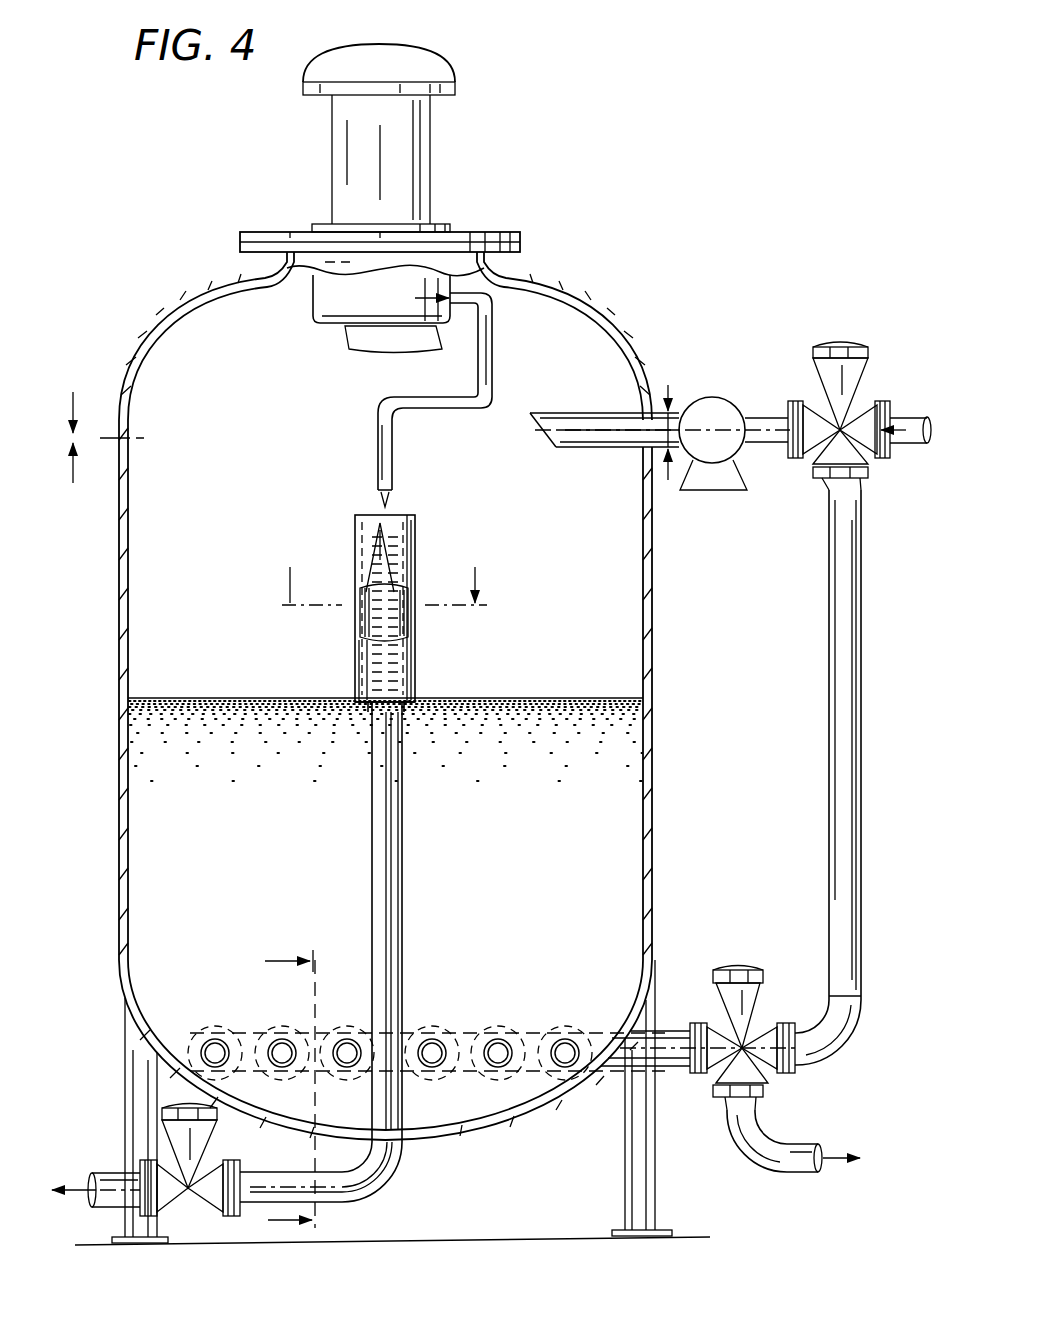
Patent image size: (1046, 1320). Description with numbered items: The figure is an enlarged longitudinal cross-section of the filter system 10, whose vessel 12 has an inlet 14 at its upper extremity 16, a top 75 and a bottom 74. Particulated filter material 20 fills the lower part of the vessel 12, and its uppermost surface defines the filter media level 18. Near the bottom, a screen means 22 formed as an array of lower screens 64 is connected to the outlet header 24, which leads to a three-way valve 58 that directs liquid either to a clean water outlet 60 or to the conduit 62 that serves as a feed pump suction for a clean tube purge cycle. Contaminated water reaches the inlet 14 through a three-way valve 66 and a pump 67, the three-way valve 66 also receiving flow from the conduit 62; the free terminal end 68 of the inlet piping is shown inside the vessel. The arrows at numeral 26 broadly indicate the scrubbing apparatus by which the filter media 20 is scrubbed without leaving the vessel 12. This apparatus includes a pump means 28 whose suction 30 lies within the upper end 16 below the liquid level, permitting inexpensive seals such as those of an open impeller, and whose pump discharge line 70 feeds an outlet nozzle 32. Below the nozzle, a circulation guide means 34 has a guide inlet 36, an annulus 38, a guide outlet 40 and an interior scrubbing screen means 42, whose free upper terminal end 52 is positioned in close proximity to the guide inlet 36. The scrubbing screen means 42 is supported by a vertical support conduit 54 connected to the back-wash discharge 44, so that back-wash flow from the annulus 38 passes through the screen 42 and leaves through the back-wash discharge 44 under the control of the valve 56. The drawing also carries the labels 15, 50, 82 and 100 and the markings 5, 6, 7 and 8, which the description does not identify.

The filter system 10 is at (717, 665).
The vessel 12 is at (654, 782).
The inlet 14 is at (585, 413).
The inlet connection 15 is at (907, 424).
The upper extremity of the vessel 16 is at (574, 346).
The filter media level 18 is at (607, 696).
The particulated filter material 20 is at (150, 762).
The screen means 22 is at (482, 1000).
The outlet header 24 is at (610, 1072).
The scrubbing apparatus 26 is at (347, 466).
The pump means 28 is at (466, 221).
The suction 30 is at (346, 354).
The outlet nozzle 32 is at (388, 494).
The circulation guide means 34 is at (346, 622).
The guide inlet 36 is at (407, 513).
The annulus 38 is at (403, 613).
The guide outlet 40 is at (364, 709).
The interior scrubbing screen means 42 is at (402, 592).
The back-wash discharge 44 is at (340, 1200).
The lower portion of distributor 50 is at (352, 651).
The free upper terminal end 52 is at (366, 521).
The vertical support conduit 54 is at (372, 840).
The valve 56 is at (180, 1196).
The three-way valve 58 is at (769, 1028).
The clean water outlet 60 is at (858, 1000).
The conduit 62 is at (828, 725).
The lower screens 64 is at (266, 1032).
The three-way valve 66 is at (817, 456).
The pump 67 is at (726, 396).
The free terminal end of the inlet piping 68 is at (534, 432).
The pump discharge line 70 is at (494, 372).
The bottom of vessel 74 is at (470, 1125).
The top of vessel 75 is at (238, 300).
The discharge outlet 82 is at (798, 1142).
The liquid level 100 is at (198, 697).
The section line 5 is at (370, 402).
The section line 6 is at (371, 476).
The section line 7- 7 is at (385, 577).
The section line 8- 8 is at (282, 1090).